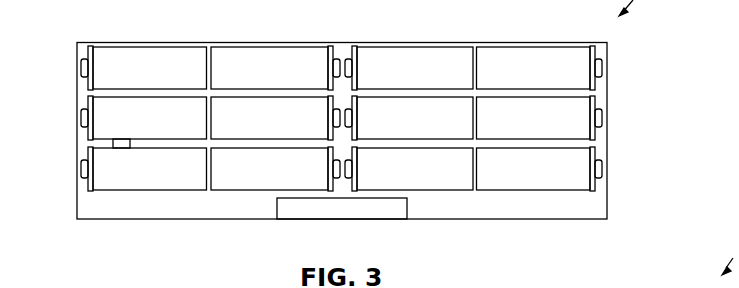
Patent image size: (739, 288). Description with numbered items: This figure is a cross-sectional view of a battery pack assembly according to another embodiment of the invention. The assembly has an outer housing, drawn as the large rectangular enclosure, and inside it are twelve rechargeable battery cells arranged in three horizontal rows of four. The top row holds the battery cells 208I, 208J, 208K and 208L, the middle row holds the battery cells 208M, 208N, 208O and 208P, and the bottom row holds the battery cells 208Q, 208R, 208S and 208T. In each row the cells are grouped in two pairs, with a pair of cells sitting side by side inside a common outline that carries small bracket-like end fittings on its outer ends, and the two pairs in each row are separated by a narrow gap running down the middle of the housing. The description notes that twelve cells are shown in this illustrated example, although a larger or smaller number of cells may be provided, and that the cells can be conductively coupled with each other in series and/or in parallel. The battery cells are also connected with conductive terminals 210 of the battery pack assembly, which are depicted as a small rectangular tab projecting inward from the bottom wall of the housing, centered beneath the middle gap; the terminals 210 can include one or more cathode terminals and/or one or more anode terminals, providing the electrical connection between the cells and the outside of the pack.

The rechargeable battery cell 208I is at (125, 81).
The rechargeable battery cell 208J is at (244, 81).
The rechargeable battery cell 208K is at (386, 81).
The rechargeable battery cell 208L is at (505, 81).
The rechargeable battery cell 208M is at (118, 132).
The rechargeable battery cell 208N is at (238, 132).
The rechargeable battery cell 208O is at (384, 132).
The rechargeable battery cell 208P is at (504, 132).
The rechargeable battery cell 208Q is at (119, 183).
The rechargeable battery cell 208R is at (239, 183).
The rechargeable battery cell 208S is at (386, 183).
The rechargeable battery cell 208T is at (504, 183).
The conductive terminal 210 is at (372, 225).